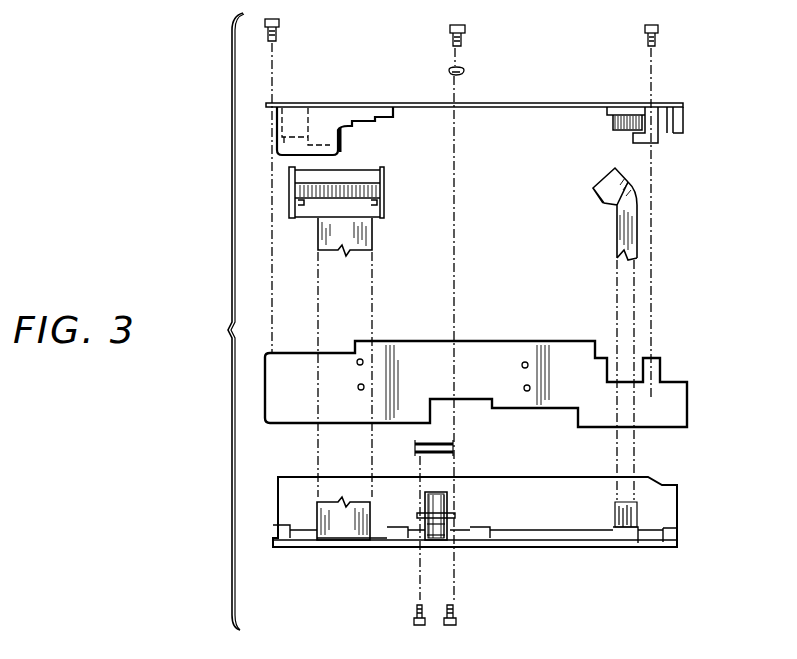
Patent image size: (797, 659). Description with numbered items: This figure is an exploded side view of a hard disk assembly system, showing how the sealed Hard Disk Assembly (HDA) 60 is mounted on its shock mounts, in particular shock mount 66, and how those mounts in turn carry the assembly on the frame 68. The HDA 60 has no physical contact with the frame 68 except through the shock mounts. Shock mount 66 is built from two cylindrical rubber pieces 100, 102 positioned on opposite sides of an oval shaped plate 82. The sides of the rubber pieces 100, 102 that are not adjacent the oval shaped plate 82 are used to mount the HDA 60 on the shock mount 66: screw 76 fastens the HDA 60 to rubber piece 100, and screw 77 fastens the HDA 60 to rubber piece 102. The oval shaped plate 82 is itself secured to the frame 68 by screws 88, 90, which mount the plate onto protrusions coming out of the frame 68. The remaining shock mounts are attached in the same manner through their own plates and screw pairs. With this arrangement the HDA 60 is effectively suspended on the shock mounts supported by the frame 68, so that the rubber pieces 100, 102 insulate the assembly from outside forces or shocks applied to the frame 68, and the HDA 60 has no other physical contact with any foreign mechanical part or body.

The Hard Disk Assembly 60 is at (663, 507).
The shock mount 66 is at (425, 513).
The frame 68 is at (592, 415).
The screw 76 is at (440, 484).
The screw 77 is at (445, 535).
The oval shaped plate 82 is at (455, 515).
The screw 88 is at (413, 612).
The screw 90 is at (456, 617).
The cylindrical rubber piece 100 is at (447, 498).
The cylindrical rubber piece 102 is at (433, 527).